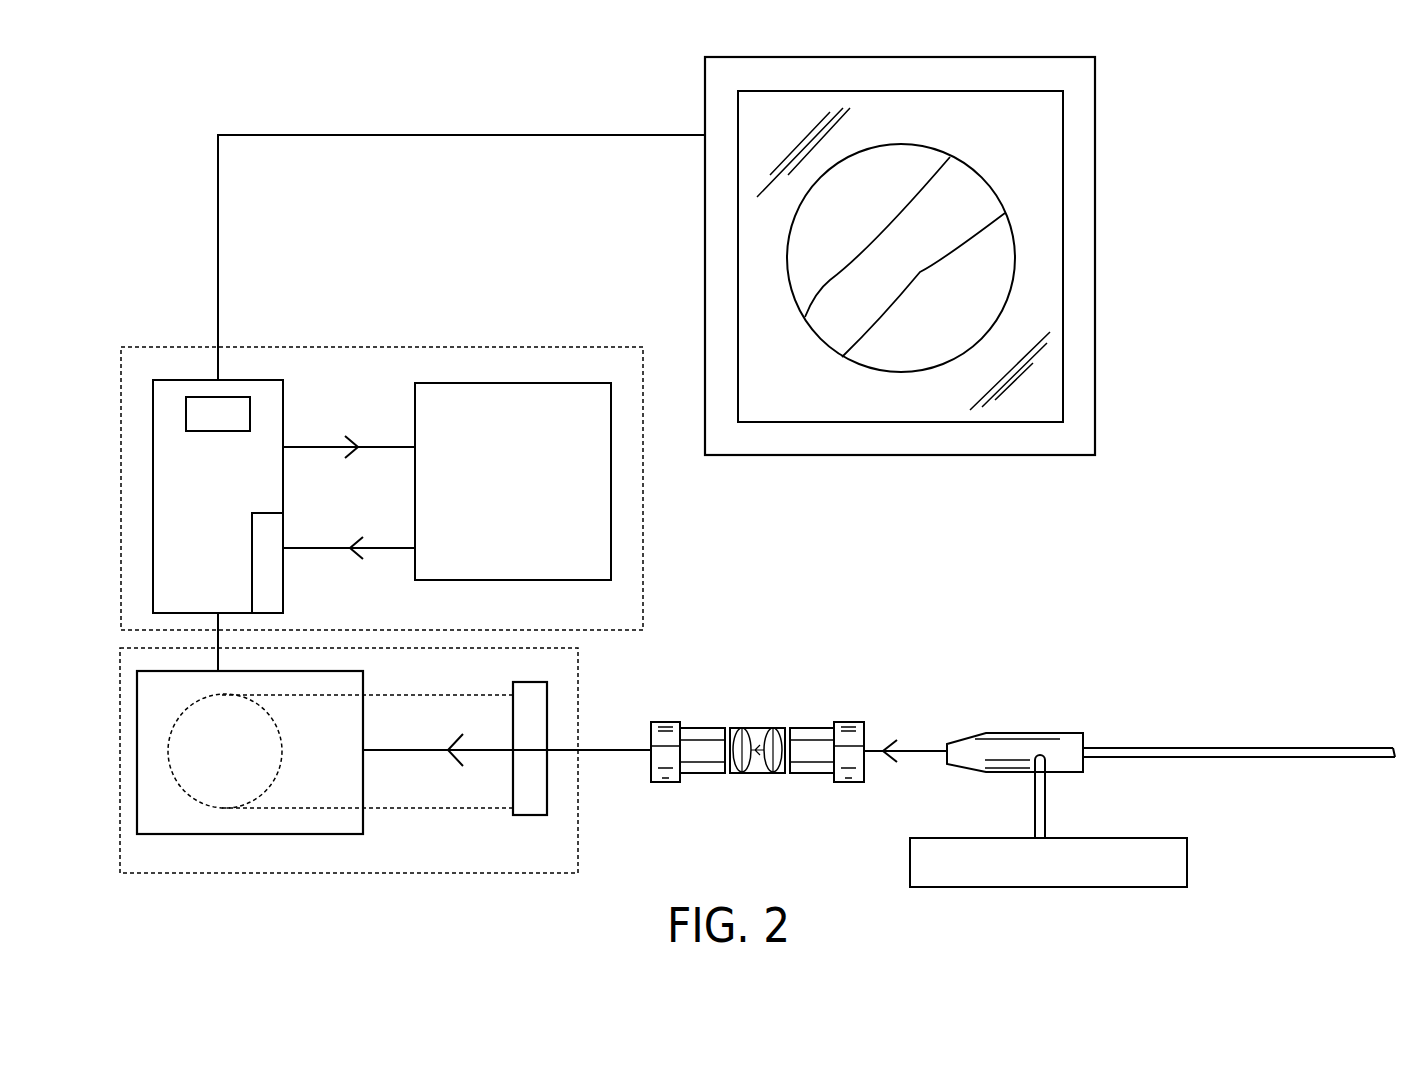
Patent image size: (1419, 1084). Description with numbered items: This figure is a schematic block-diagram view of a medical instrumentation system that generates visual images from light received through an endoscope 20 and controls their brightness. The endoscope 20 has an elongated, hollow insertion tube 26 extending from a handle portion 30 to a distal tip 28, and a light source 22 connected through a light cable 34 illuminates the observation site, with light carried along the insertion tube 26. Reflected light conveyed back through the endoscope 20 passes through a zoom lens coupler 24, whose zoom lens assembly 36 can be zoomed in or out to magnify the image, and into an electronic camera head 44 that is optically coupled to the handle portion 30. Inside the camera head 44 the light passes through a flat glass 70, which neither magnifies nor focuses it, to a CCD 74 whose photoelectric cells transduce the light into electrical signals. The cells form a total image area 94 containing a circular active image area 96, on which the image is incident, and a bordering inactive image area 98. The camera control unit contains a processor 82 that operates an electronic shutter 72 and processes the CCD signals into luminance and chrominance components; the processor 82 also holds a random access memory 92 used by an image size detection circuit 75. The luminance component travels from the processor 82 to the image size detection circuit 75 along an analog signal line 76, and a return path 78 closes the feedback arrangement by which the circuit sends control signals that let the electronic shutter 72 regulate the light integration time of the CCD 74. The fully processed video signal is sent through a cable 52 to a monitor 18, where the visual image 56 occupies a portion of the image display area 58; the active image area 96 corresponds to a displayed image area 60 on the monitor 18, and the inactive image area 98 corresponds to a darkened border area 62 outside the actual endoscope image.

The monitor 18 is at (720, 227).
The endoscope 20 is at (1183, 724).
The light source 22 is at (1142, 837).
The zoom lens coupler 24 is at (760, 740).
The insertion tube 26 is at (1322, 747).
The distal tip 28 is at (1400, 745).
The handle portion 30 is at (1003, 733).
The light cable 34 is at (1035, 803).
The zoom lens assembly 36 is at (758, 768).
The electronic camera head 44 is at (567, 795).
The cable 52 is at (220, 283).
The visual image 56 is at (920, 137).
The image display area 58 is at (1067, 161).
The displayed image area 60 is at (967, 311).
The darkened border area 62 is at (1012, 403).
The flat glass 70 is at (524, 803).
The electronic shutter 72 is at (269, 587).
The CCD 74 is at (337, 818).
The image size detection circuit 75 is at (555, 568).
The analog signal line 76 is at (387, 450).
The signal line 78 is at (383, 548).
The processor 82 is at (275, 402).
The random access memory 92 is at (192, 403).
The total image area 94 is at (223, 764).
The active image area 96 is at (257, 762).
The inactive image area 98 is at (147, 702).